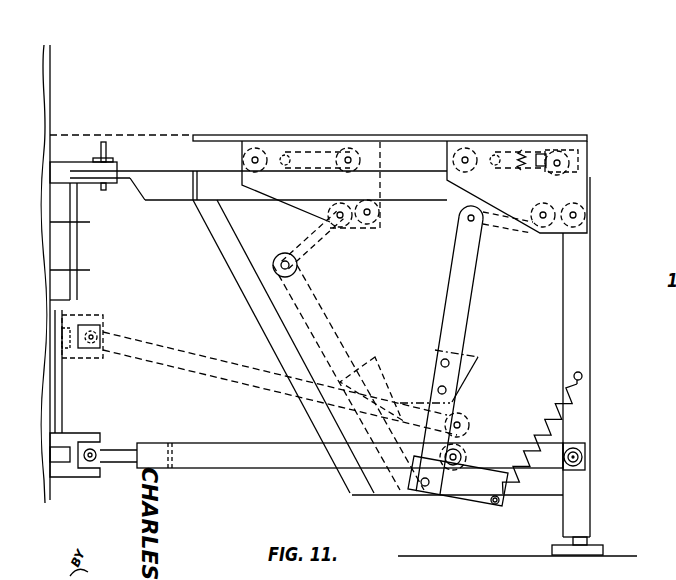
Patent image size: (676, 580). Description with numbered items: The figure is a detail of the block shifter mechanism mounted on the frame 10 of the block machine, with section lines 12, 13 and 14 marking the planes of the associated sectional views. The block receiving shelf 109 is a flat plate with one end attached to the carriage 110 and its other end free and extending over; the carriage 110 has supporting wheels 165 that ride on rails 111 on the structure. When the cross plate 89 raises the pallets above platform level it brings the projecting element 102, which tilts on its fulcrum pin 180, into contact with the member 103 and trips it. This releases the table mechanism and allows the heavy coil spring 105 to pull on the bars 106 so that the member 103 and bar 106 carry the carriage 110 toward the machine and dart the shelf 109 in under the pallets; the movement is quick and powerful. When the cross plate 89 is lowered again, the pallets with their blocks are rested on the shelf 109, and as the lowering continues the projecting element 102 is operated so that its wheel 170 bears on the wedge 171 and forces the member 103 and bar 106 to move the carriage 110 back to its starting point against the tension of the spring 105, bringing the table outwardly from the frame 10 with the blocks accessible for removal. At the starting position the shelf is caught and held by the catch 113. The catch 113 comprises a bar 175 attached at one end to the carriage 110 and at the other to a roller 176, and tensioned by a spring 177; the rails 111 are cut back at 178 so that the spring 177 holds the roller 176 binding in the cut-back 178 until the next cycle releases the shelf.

The frame 10 is at (50, 54).
The section line 12- 12 is at (530, 360).
The section line 13- 13 is at (407, 70).
The section line 14- 14 is at (93, 147).
The cross plate 89 is at (68, 435).
The projecting element 102 is at (286, 440).
The member 103 is at (326, 283).
The coil spring 105 is at (572, 398).
The bars 106 is at (515, 222).
The block receiving shelf 109 is at (246, 132).
The carriage 110 is at (582, 198).
The rails 111 is at (411, 195).
The catch 113 is at (614, 122).
The supporting wheels 165 is at (462, 145).
The wheel 170 is at (440, 502).
The wedge 171 is at (398, 336).
The bar 175 is at (506, 146).
The roller 176 is at (547, 157).
The spring 177 is at (522, 148).
The cut-back 178 is at (594, 172).
The fulcrum pin 180 is at (585, 455).